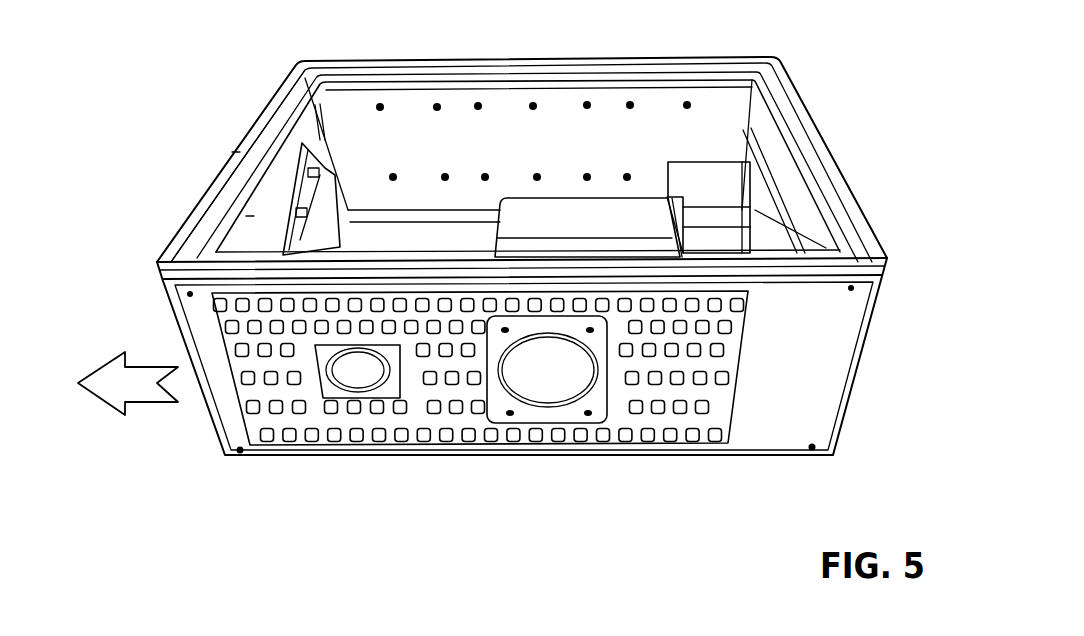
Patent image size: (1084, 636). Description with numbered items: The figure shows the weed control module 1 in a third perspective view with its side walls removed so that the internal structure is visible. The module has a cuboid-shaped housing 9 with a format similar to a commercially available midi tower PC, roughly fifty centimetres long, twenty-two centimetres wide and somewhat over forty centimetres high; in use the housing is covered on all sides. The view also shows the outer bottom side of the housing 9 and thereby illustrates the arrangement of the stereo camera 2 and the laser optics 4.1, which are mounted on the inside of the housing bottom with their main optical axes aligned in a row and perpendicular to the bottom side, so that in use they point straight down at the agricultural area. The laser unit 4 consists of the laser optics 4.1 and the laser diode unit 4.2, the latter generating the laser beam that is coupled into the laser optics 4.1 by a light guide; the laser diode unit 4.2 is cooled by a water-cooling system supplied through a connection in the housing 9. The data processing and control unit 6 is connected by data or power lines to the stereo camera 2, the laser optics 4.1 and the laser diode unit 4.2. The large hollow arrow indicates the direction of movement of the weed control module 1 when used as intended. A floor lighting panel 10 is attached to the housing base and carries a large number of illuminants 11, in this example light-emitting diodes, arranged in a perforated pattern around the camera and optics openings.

The weed control module 1 is at (836, 90).
The stereo camera 2 is at (365, 375).
The laser unit 4 is at (717, 505).
The laser optics 4.1 is at (565, 378).
The laser diode unit 4.2 is at (338, 207).
The data processing and control unit 6 is at (707, 175).
The housing 9 is at (250, 147).
The floor lighting panel 10 is at (243, 393).
The illuminants 11 is at (330, 488).